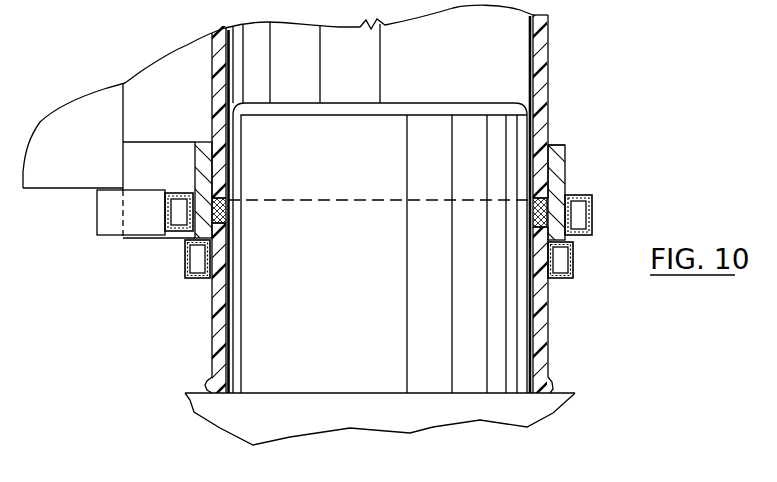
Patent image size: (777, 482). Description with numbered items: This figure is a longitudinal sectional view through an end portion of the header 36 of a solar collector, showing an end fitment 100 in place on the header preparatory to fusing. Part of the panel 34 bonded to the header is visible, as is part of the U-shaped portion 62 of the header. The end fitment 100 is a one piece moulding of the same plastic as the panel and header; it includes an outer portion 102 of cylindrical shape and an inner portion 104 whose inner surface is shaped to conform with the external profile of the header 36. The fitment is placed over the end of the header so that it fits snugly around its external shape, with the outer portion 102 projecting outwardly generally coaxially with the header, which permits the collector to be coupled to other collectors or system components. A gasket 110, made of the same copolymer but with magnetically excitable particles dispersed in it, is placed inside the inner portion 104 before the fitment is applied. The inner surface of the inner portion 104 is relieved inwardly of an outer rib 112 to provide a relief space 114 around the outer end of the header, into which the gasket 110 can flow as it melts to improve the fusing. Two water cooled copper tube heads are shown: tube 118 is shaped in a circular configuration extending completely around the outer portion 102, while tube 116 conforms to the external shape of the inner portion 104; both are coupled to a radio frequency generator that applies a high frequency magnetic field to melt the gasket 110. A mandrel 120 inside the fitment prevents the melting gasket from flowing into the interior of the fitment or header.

The panel 34 is at (70, 120).
The U-shaped portion 62 is at (182, 64).
The header 36 is at (556, 52).
The outer rib 112 is at (549, 147).
The inner portion 104 is at (557, 172).
The relief space 114 is at (565, 196).
The gasket 110 is at (228, 217).
The tube 116 is at (148, 218).
The tube 118 is at (186, 281).
The mandrel 120 is at (380, 248).
The end fitment 100 is at (556, 315).
The outer portion 102 is at (543, 340).